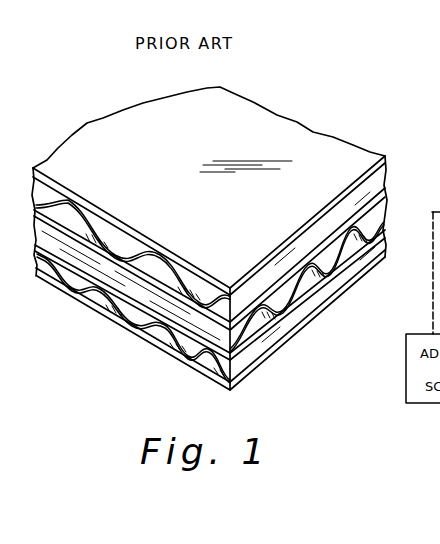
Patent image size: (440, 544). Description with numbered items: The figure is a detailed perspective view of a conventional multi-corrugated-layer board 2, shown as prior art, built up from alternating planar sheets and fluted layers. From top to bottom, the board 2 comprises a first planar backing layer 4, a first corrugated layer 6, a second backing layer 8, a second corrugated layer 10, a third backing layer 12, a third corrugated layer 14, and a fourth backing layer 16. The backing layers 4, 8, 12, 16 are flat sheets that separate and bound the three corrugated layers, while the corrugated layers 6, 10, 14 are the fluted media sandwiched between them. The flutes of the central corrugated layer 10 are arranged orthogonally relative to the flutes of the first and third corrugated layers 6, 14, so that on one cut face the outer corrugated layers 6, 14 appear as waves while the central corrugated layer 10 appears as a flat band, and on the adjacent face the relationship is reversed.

The multi-corrugated-layer board 2 is at (294, 340).
The first planar backing layer 4 is at (292, 130).
The first corrugated layer 6 is at (162, 266).
The second backing layer 8 is at (388, 183).
The second corrugated layer 10 is at (388, 210).
The third backing layer 12 is at (313, 288).
The third corrugated layer 14 is at (73, 278).
The fourth backing layer 16 is at (138, 334).